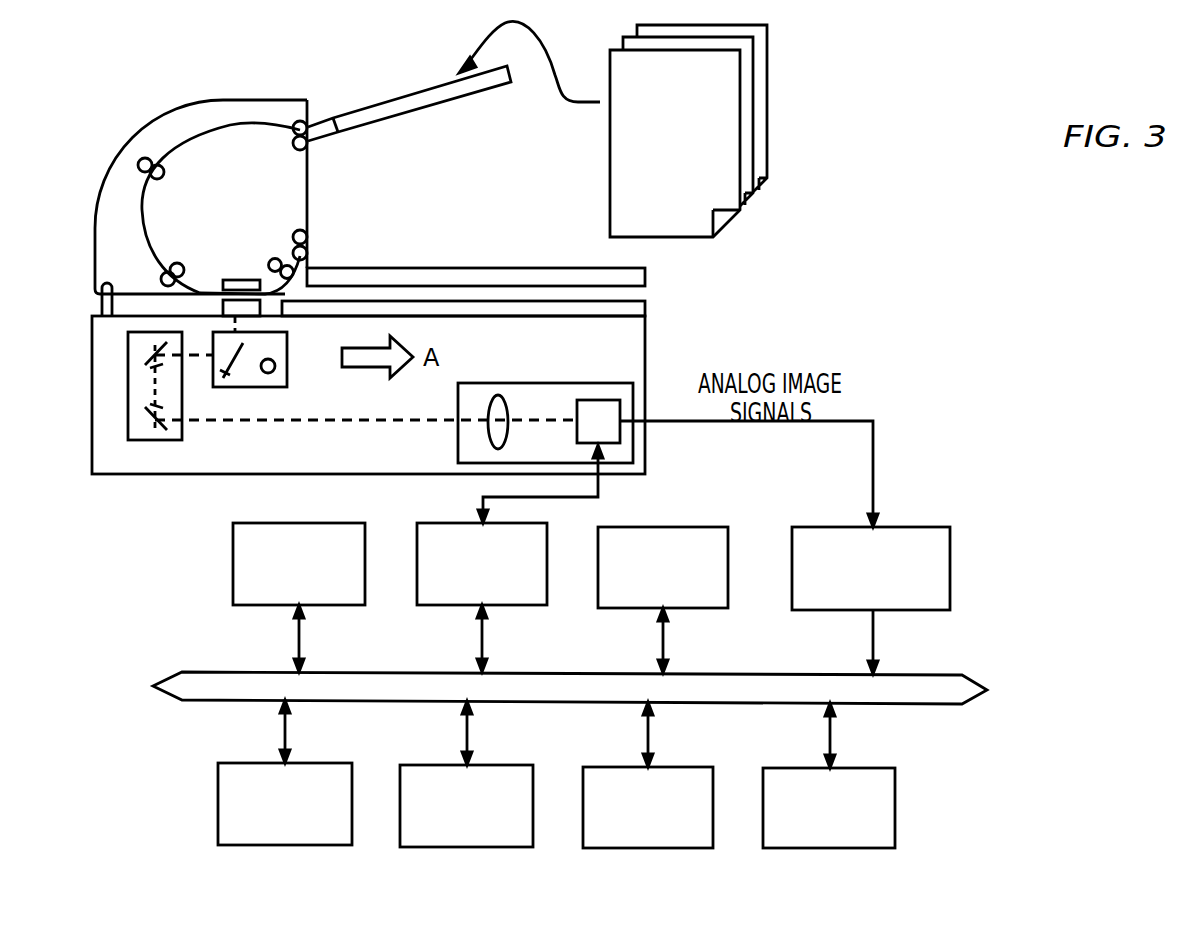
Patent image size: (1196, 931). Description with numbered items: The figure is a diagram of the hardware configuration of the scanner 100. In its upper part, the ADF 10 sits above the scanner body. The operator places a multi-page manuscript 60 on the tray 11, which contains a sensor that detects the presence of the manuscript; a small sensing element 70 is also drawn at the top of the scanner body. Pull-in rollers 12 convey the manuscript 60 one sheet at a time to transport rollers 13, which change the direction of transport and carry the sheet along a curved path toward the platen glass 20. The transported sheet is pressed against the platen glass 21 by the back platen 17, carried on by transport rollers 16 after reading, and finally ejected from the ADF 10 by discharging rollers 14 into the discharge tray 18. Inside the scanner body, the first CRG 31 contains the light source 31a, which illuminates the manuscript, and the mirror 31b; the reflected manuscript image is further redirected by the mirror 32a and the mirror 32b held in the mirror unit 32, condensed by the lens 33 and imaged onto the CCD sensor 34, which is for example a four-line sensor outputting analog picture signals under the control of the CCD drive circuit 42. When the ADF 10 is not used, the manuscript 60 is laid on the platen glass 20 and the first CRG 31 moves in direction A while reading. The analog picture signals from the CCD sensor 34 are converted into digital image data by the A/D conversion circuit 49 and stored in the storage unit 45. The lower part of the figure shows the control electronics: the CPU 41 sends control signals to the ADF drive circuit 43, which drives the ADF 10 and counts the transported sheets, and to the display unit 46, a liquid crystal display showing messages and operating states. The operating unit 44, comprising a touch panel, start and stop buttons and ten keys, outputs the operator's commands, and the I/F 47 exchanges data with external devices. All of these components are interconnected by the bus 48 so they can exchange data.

The scanner 100 is at (905, 92).
The ADF 10 is at (194, 100).
The tray 11 is at (444, 105).
The pull-in rollers 12 is at (308, 114).
The transport rollers 13 is at (164, 169).
The discharging rollers 14 is at (310, 244).
The transport rollers 16 is at (275, 260).
The back platen 17 is at (231, 280).
The discharge tray 18 is at (648, 278).
The platen glass 20 is at (648, 309).
The platen glass 21 is at (263, 318).
The first CRG 31 is at (271, 376).
The light source 31a is at (268, 374).
The mirror 31b is at (226, 380).
The mirror unit 32 is at (142, 398).
The mirror 32a is at (145, 358).
The mirror 32b is at (145, 405).
The lens 33 is at (498, 395).
The CCD sensor 34 is at (595, 400).
The CPU 41 is at (729, 533).
The CCD drive circuit 42 is at (548, 531).
The ADF drive circuit 43 is at (366, 527).
The operating unit 44 is at (322, 763).
The storage unit 45 is at (505, 765).
The display unit 46 is at (683, 767).
The I/F 47 is at (855, 768).
The bus 48 is at (207, 672).
The A/D conversion circuit 49 is at (905, 527).
The manuscript 60 is at (757, 128).
The document sensor 70 is at (102, 300).